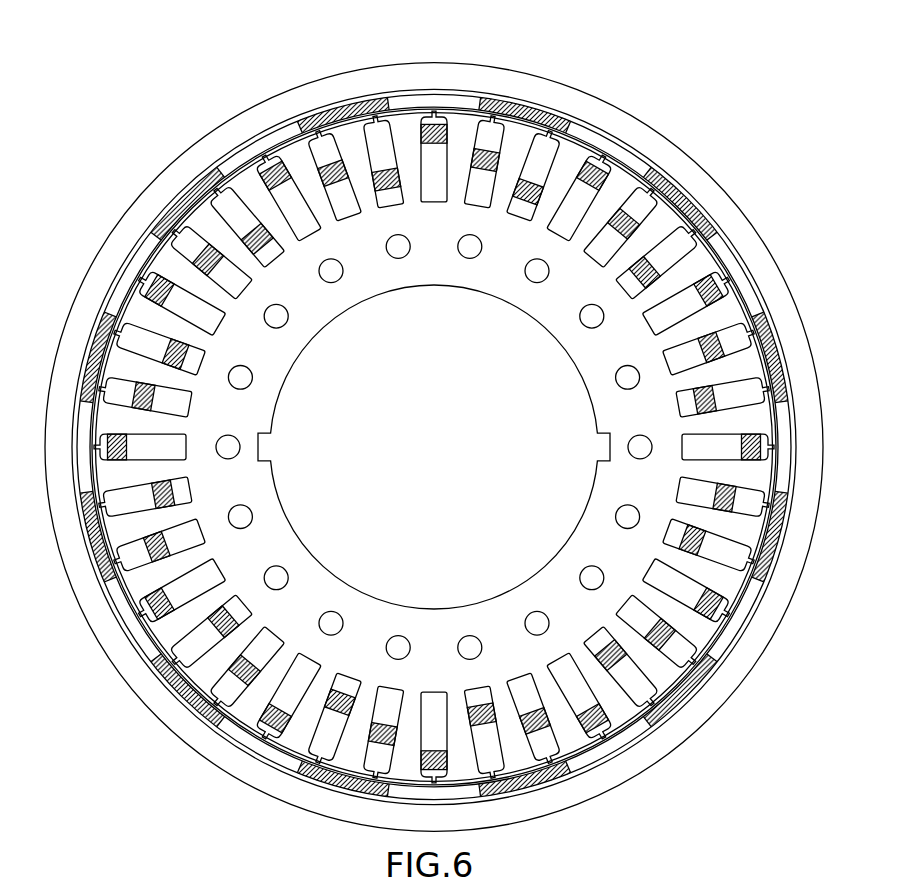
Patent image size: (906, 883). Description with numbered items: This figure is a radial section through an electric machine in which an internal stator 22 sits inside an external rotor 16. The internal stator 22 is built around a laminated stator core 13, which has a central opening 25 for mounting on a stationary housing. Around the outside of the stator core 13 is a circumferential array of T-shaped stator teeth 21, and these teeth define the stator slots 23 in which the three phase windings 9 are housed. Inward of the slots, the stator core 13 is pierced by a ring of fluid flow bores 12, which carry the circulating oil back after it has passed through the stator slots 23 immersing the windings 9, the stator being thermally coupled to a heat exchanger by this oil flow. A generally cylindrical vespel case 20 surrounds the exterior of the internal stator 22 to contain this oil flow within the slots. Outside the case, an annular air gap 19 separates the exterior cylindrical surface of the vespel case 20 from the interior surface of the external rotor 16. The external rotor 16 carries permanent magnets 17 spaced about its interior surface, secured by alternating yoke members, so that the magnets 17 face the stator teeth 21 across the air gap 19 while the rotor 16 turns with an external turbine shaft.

The windings 9 is at (434, 434).
The fluid flow bores 12 is at (466, 257).
The stator core 13 is at (434, 447).
The external rotor 16 is at (178, 180).
The permanent magnets 17 is at (90, 362).
The annular air gap 19 is at (83, 448).
The vespel case 20 is at (135, 622).
The T-shaped stator teeth 21 is at (352, 137).
The internal stator 22 is at (434, 449).
The stator slots 23 is at (187, 300).
The central opening 25 is at (420, 613).